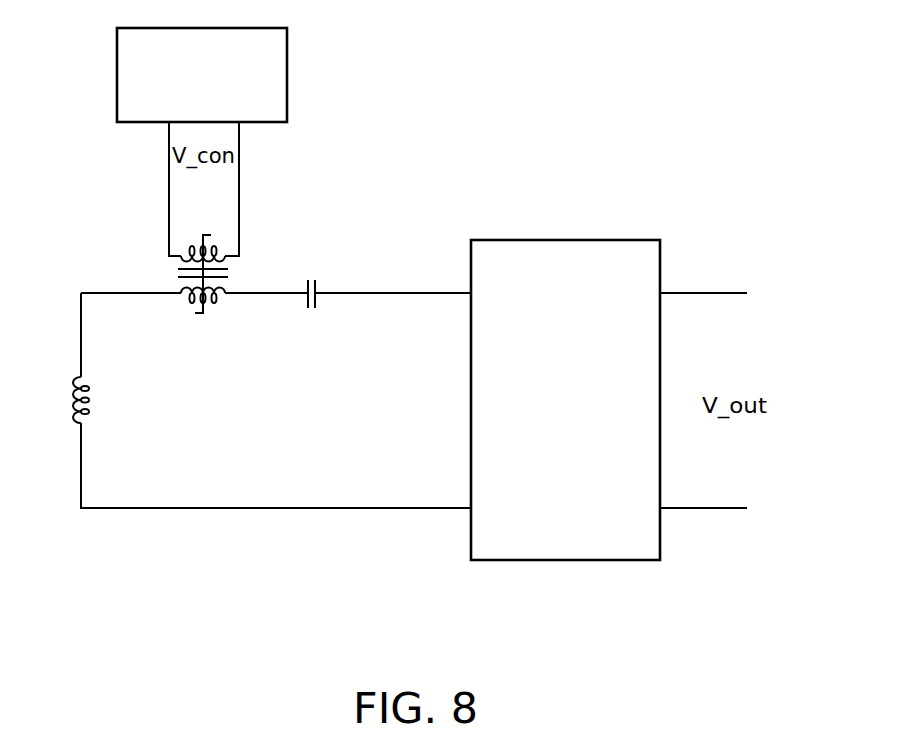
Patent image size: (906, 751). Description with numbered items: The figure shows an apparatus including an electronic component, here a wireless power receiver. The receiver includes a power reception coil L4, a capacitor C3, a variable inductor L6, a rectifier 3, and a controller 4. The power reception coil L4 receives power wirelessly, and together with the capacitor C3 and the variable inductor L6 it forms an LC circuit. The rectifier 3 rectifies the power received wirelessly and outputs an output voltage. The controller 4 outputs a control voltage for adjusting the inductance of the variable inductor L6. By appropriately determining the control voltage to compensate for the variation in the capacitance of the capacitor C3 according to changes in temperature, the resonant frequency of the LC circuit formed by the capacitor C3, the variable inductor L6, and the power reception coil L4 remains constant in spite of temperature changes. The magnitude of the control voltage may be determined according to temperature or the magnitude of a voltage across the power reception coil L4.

The rectifier 3 is at (621, 240).
The controller 4 is at (287, 75).
The power reception coil L4 is at (61, 400).
The variable inductor L6 is at (203, 290).
The capacitor C3 is at (312, 276).